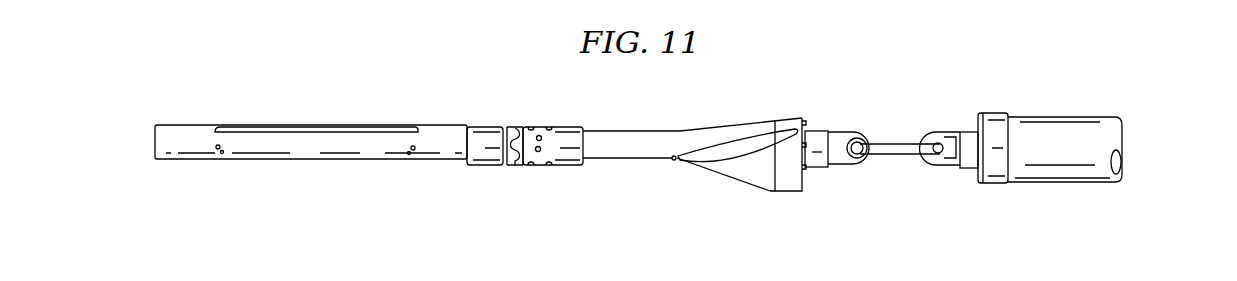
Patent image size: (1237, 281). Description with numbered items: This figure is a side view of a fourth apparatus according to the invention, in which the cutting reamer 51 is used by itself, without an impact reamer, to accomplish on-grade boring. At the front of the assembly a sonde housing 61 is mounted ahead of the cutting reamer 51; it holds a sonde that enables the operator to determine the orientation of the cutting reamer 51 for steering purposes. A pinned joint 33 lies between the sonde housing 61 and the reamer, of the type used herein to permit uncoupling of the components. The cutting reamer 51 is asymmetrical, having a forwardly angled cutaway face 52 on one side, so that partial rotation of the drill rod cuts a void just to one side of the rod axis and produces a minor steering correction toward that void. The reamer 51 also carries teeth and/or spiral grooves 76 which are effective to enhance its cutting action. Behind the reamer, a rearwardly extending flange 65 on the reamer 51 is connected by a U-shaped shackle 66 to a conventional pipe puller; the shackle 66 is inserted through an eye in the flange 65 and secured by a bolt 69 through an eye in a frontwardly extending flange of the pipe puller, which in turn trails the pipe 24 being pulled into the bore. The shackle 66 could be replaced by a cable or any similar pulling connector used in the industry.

The sonde housing 61 is at (305, 159).
The pinned joint 33 is at (514, 126).
The forwardly angled cutaway face 52 is at (727, 124).
The cutting reamer 51 is at (787, 191).
The teeth and/or spiral grooves 76 is at (722, 160).
The rearwardly extending flange 65 is at (842, 131).
The U-shaped shackle 66 is at (892, 143).
The bolt 69 is at (938, 143).
The pipe 24 is at (1055, 117).